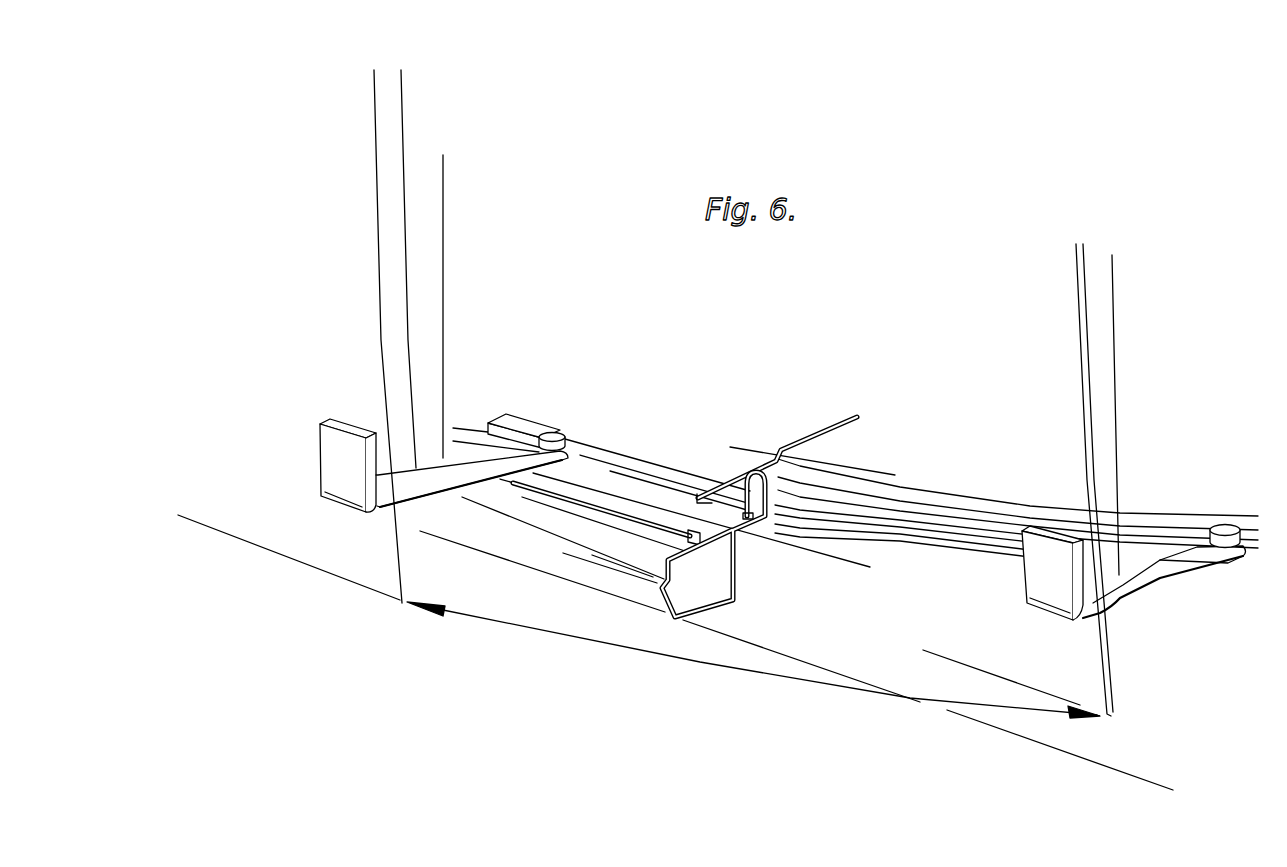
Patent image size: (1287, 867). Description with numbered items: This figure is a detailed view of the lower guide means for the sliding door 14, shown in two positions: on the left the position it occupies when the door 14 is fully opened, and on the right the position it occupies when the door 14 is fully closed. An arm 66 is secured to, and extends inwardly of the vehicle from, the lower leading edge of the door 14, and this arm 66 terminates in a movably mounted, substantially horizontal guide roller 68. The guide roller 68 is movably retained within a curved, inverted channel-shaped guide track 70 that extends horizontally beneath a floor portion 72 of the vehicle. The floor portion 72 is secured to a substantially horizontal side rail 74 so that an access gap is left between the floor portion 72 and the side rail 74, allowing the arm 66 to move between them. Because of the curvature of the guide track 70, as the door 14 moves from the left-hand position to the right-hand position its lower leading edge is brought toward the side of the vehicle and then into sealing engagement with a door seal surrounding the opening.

The door 14 is at (270, 404).
The arm 66 is at (420, 483).
The guide roller 68 is at (578, 412).
The guide track 70 is at (955, 510).
The floor portion 72 is at (748, 462).
The side rail 74 is at (659, 601).